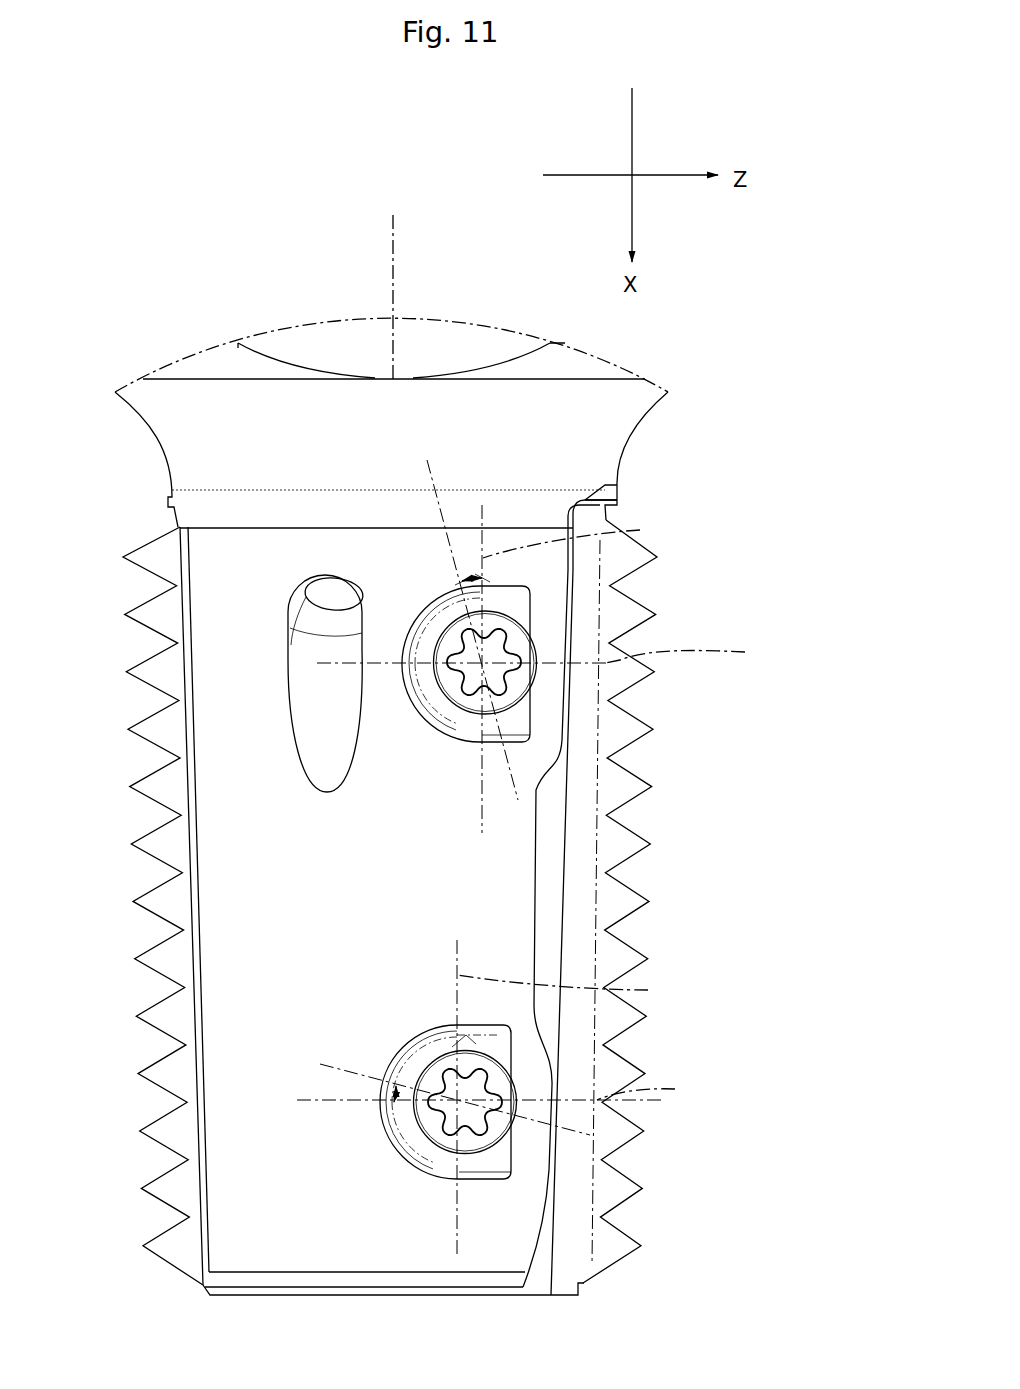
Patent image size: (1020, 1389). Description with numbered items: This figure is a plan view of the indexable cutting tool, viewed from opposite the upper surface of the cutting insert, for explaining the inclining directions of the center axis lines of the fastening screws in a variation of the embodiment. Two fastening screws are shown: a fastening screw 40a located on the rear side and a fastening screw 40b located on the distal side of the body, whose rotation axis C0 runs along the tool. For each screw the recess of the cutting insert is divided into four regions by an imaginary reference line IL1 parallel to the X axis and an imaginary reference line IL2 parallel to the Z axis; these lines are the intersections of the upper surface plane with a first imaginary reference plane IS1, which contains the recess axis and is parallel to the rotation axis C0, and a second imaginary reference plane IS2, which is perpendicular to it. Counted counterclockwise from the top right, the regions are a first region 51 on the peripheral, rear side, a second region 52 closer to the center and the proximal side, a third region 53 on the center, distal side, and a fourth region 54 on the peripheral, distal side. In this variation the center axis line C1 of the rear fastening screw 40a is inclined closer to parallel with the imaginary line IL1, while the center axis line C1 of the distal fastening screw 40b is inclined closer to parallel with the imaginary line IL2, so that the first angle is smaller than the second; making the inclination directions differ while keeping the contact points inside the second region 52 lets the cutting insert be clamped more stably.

The first region 51 is at (540, 608).
The second region 52 is at (443, 610).
The third region 53 is at (437, 702).
The fourth region 54 is at (542, 686).
The fastening screw 40a is at (532, 675).
The fastening screw 40b is at (497, 1127).
The first imaginary reference plane IS1 is at (478, 552).
The second imaginary reference plane IS2 is at (390, 665).
The first imaginary reference line IL1 is at (570, 757).
The second imaginary reference line IL2 is at (688, 870).
The rotation axis C0 is at (391, 283).
The center axis line C1 is at (437, 797).